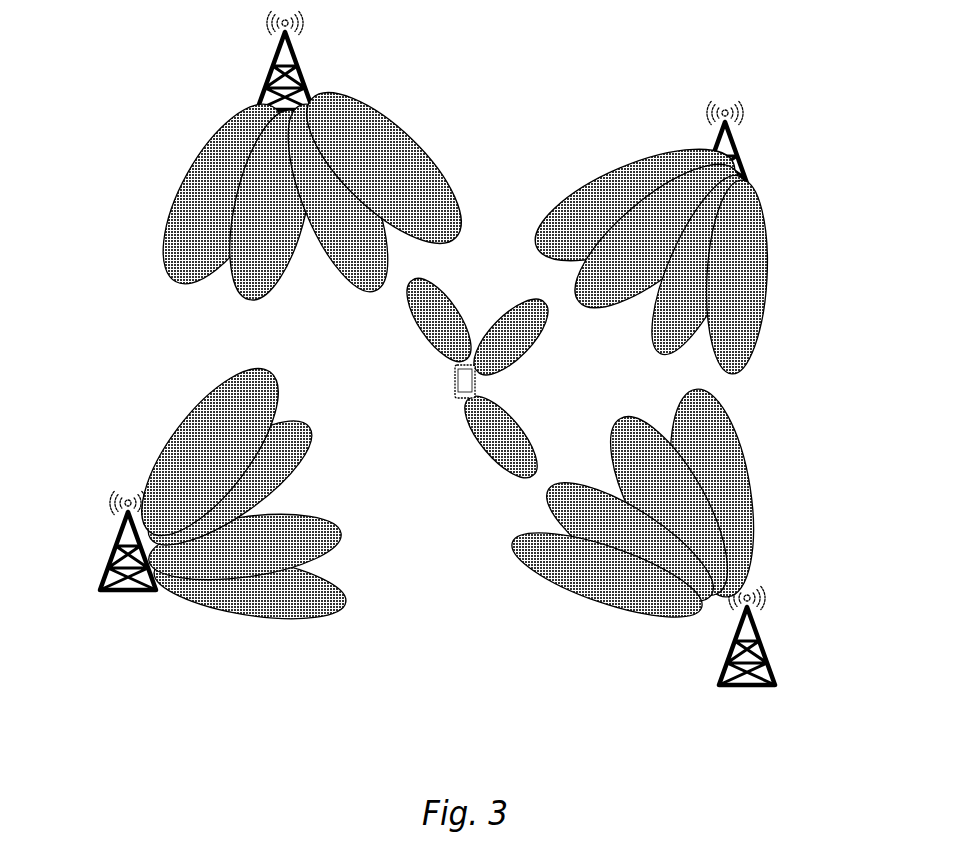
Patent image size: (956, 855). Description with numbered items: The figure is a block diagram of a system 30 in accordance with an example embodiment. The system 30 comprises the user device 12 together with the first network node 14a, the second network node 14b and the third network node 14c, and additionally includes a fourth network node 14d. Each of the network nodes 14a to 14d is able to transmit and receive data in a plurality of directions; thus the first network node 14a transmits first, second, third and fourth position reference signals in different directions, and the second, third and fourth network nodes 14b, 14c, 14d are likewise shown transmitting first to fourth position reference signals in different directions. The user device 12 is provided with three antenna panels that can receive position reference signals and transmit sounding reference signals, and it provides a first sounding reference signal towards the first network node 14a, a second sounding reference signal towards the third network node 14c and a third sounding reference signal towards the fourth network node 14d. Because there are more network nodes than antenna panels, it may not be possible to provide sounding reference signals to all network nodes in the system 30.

The user device 12 is at (453, 393).
The first network node 14a is at (268, 70).
The second network node 14b is at (103, 568).
The third network node 14c is at (738, 160).
The fourth network node 14d is at (727, 658).
The system 30 is at (773, 764).